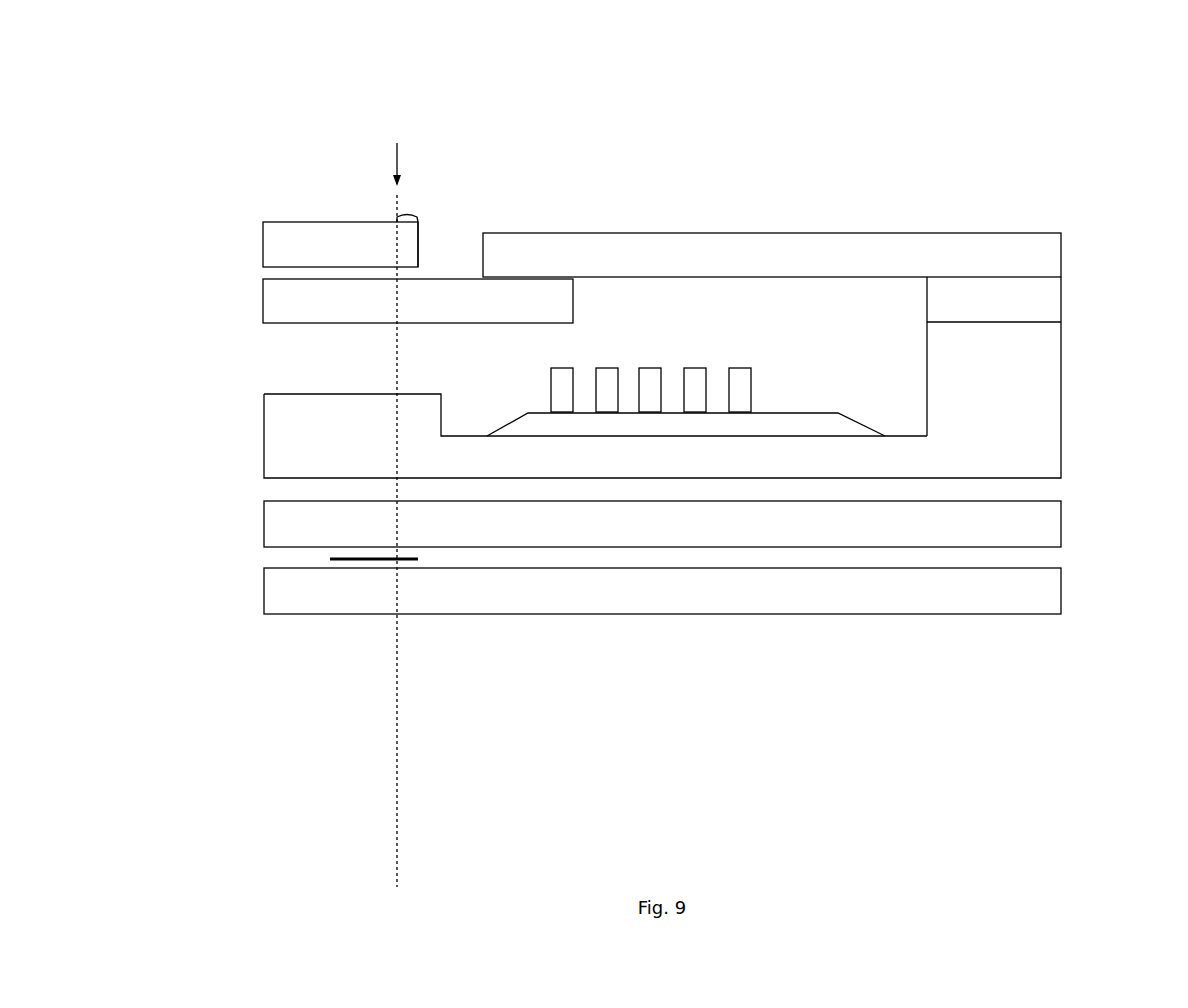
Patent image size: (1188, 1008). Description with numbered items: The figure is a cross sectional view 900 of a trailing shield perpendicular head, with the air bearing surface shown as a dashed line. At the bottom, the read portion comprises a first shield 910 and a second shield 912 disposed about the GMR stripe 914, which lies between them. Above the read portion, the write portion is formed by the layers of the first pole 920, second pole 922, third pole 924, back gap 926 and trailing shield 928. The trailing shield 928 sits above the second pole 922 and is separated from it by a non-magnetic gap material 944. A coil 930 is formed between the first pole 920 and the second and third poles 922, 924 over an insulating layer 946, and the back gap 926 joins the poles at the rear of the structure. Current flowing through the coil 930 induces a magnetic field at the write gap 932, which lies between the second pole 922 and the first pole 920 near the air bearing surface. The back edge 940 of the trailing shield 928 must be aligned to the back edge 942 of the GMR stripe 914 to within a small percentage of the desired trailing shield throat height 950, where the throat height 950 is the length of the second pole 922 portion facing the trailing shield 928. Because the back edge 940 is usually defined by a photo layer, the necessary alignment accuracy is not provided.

The cross sectional view 900 is at (258, 98).
The first shield 910 is at (1038, 587).
The second shield 912 is at (1038, 522).
The GMR stripe 914 is at (365, 560).
The first pole 920 is at (1037, 457).
The second pole 922 is at (275, 300).
The third pole 924 is at (1043, 255).
The back gap 926 is at (1040, 393).
The trailing shield 928 is at (275, 237).
The coil 930 is at (715, 362).
The write gap 932 is at (287, 352).
The back edge of the trailing shield layer 940 is at (419, 237).
The back edge of the GMR stripe 942 is at (420, 559).
The non-magnetic gap material 944 is at (268, 273).
The insulating layer 946 is at (763, 420).
The trailing shield throat height 950 is at (412, 208).